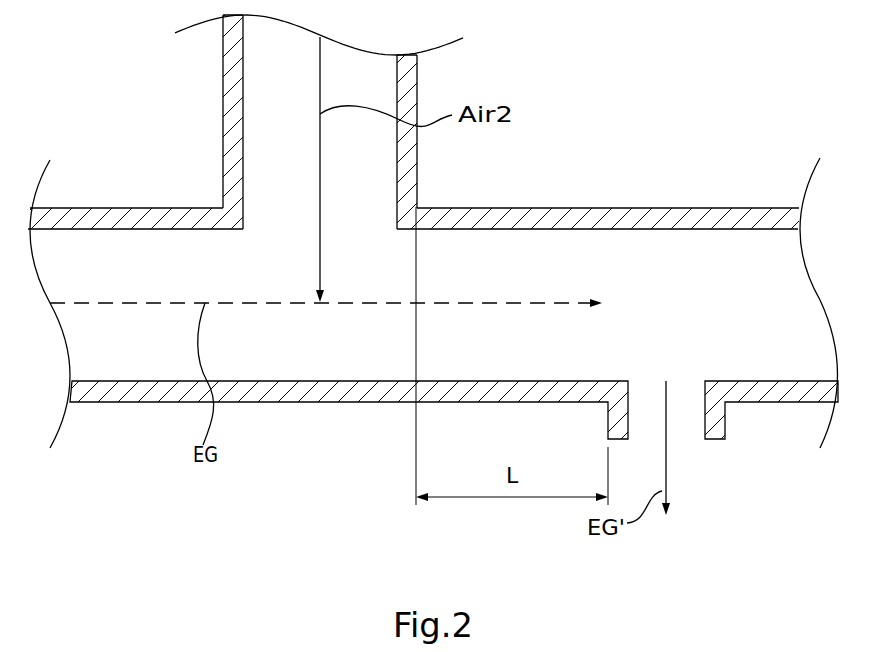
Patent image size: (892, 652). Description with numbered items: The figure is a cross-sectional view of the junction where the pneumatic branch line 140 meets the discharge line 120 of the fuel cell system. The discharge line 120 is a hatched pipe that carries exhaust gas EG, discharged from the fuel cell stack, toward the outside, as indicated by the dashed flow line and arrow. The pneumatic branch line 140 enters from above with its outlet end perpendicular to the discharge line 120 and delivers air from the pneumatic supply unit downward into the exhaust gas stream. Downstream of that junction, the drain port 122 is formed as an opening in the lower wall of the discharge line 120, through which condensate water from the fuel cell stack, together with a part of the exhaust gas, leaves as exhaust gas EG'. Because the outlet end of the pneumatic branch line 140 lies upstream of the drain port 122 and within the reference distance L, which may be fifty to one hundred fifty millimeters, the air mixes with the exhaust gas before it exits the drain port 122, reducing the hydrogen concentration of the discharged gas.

The discharge line 120 is at (337, 402).
The drain port 122 is at (708, 420).
The pneumatic branch line 140 is at (223, 112).